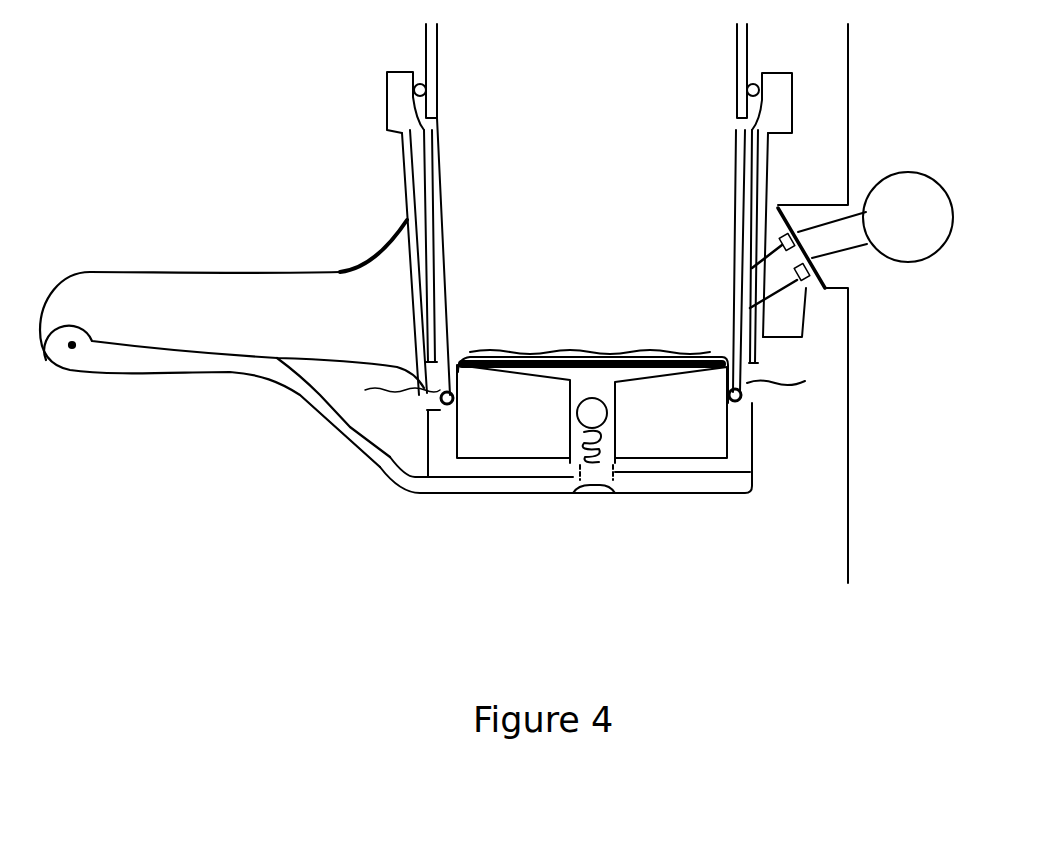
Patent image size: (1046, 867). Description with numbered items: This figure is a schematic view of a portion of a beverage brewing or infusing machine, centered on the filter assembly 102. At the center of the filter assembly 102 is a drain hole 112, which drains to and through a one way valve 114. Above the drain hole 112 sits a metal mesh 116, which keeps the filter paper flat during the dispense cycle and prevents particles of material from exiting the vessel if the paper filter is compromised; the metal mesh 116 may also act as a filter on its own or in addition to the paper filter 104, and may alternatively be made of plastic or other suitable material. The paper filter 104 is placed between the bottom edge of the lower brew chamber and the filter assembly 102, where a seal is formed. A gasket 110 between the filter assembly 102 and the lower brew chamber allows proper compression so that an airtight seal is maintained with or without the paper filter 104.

The filter assembly 102 is at (510, 421).
The filter 104 is at (388, 390).
The gasket 110 is at (440, 398).
The drain hole 112 is at (592, 492).
The one way valve 114 is at (593, 412).
The metal mesh 116 is at (577, 373).